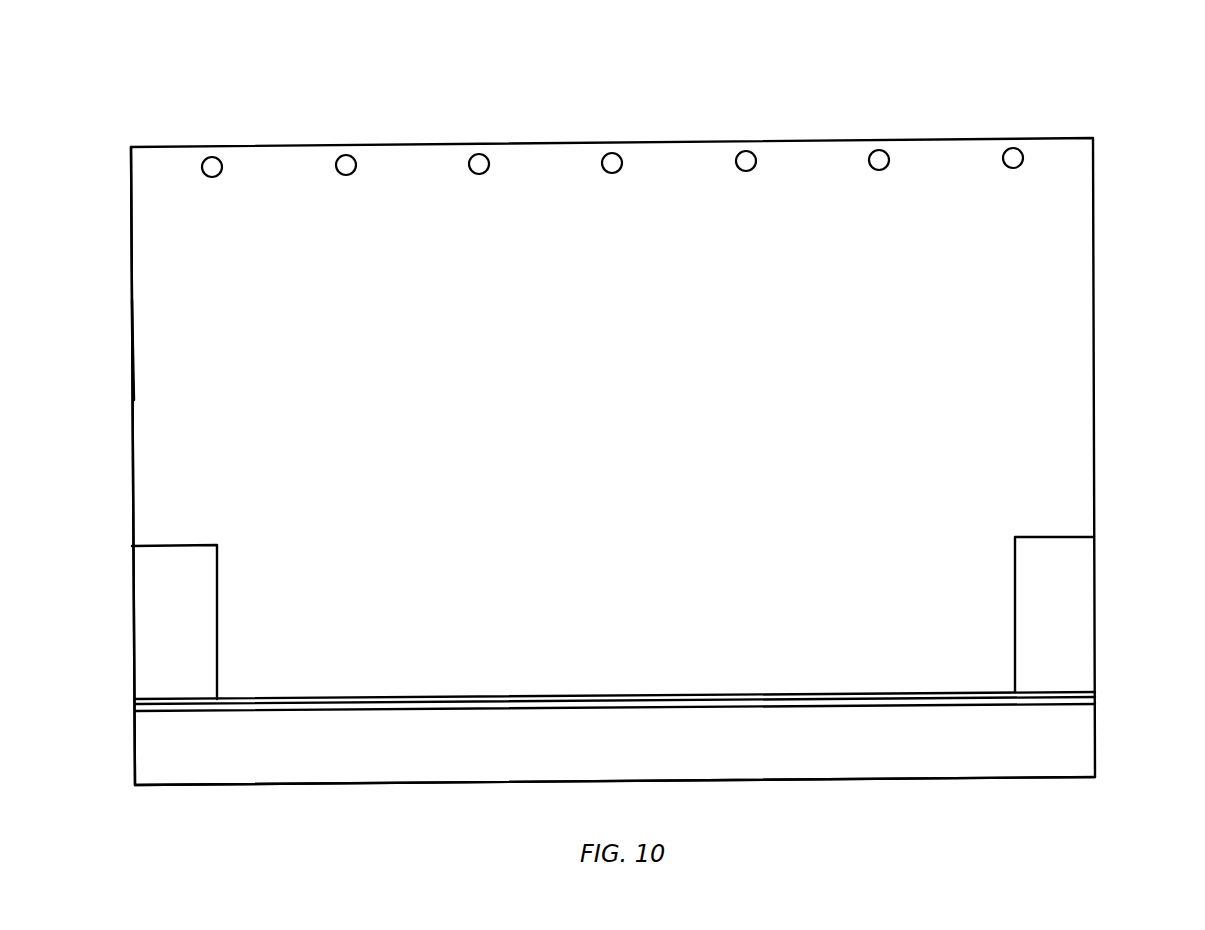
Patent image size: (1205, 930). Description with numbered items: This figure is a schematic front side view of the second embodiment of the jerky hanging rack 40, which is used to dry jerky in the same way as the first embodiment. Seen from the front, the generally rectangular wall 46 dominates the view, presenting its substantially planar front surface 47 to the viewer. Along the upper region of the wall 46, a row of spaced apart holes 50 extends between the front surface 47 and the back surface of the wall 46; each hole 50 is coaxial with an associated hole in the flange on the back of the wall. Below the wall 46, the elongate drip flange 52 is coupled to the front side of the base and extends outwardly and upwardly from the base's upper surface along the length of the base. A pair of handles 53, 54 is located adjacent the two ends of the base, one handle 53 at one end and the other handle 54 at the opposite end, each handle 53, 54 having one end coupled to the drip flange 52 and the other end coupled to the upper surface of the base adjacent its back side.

The second embodiment of the jerky hanging rack 40 is at (109, 113).
The wall 46 is at (124, 343).
The front surface of the wall 47 is at (146, 283).
The holes of the wall 50 is at (224, 166).
The drip flange 52 is at (869, 765).
The handle 53 is at (142, 620).
The handle 54 is at (1084, 604).